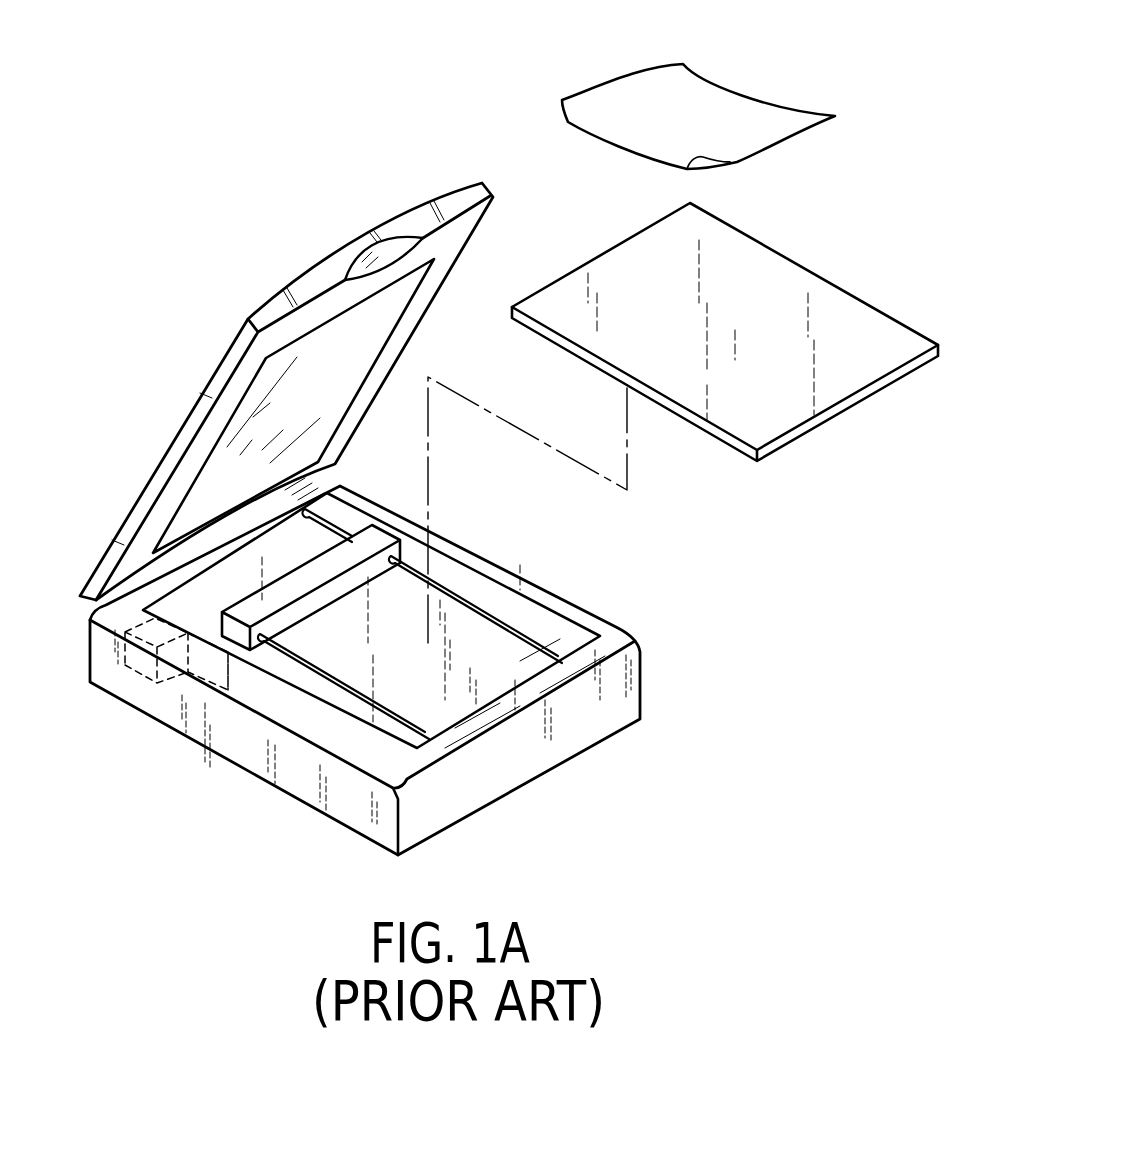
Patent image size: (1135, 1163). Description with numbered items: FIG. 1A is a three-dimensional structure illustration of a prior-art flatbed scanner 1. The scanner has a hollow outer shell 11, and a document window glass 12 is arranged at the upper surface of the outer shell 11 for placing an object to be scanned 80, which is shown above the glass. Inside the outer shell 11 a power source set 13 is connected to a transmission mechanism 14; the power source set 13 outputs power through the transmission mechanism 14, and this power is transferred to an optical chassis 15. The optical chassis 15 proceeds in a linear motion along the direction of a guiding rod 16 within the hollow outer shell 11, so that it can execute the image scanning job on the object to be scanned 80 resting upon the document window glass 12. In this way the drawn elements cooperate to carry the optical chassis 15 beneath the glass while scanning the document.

The flatbed scanner 1 is at (509, 531).
The outer shell 11 is at (620, 627).
The document window glass 12 is at (788, 267).
The power source set 13 is at (143, 665).
The transmission mechanism 14 is at (218, 677).
The optical chassis 15 is at (374, 532).
The guiding rod 16 is at (462, 598).
The object to be scanned 80 is at (698, 83).